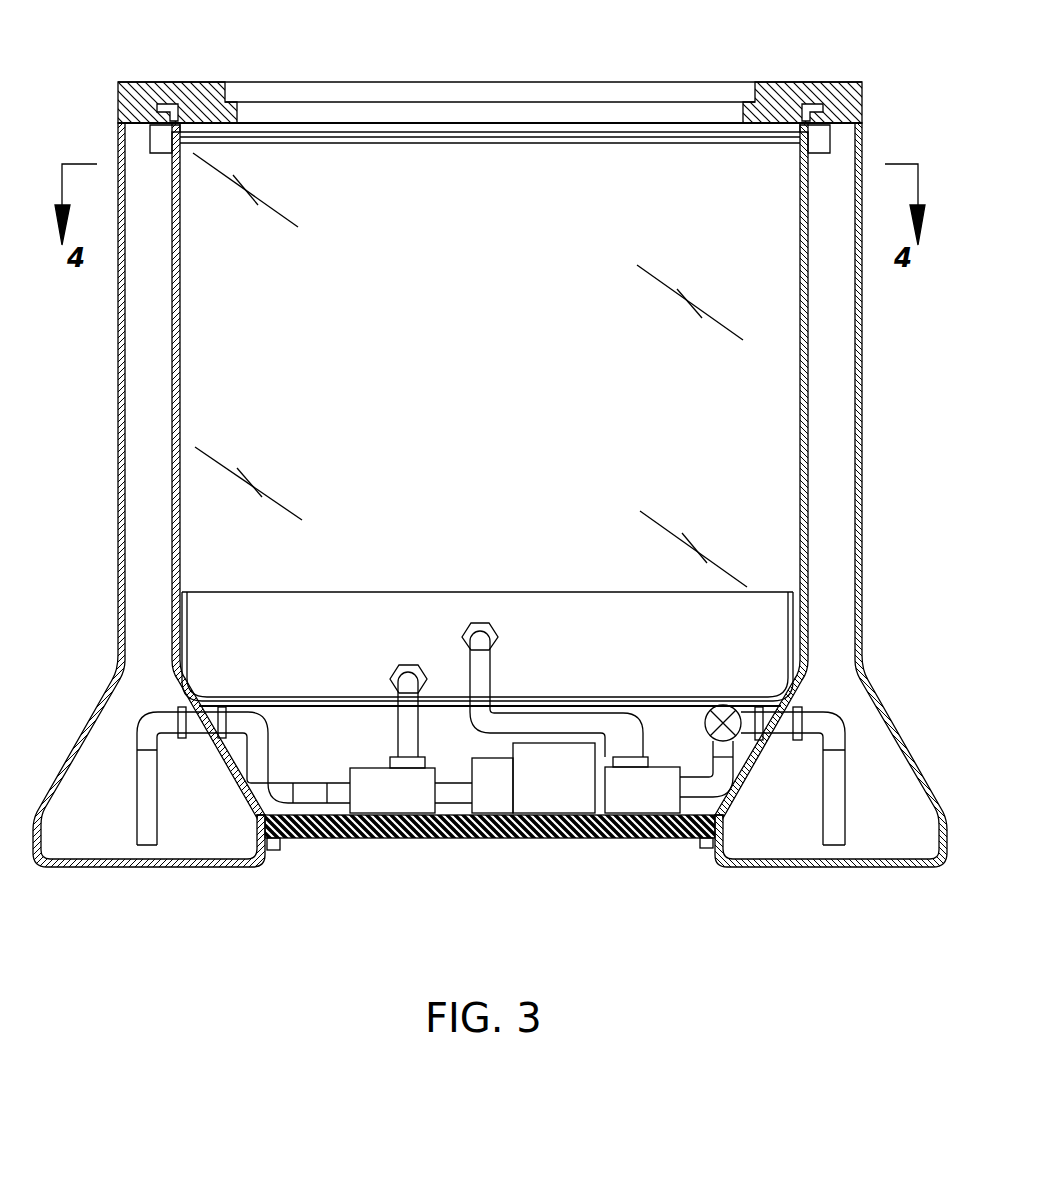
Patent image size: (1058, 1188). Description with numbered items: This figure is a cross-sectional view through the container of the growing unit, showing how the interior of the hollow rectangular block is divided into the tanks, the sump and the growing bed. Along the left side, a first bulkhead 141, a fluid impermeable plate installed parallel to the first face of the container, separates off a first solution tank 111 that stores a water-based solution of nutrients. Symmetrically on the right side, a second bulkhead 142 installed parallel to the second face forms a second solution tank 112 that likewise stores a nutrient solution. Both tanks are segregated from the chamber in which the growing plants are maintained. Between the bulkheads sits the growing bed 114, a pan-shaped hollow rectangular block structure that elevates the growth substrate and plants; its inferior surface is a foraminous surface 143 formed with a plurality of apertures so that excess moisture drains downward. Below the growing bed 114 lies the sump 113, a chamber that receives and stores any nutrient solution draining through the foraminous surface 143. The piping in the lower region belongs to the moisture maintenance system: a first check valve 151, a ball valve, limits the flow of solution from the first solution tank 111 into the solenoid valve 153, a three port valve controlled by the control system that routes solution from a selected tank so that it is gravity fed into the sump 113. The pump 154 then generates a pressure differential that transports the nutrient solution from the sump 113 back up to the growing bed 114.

The first solution tank 111 is at (143, 373).
The second solution tank 112 is at (830, 408).
The sump 113 is at (303, 745).
The growing bed 114 is at (248, 610).
The first bulkhead 141 is at (178, 203).
The second bulkhead 142 is at (800, 180).
The foraminous surface 143 is at (330, 707).
The first check valve 151 is at (722, 725).
The solenoid valve 153 is at (398, 802).
The pump 154 is at (552, 793).